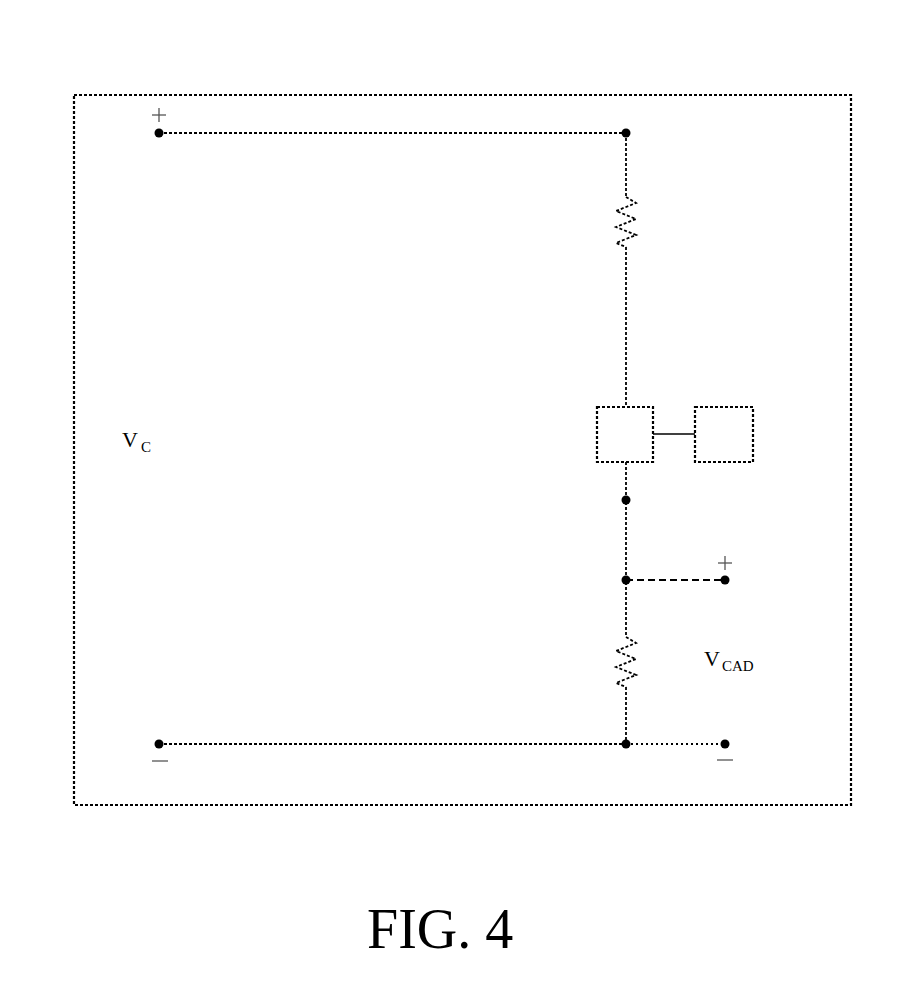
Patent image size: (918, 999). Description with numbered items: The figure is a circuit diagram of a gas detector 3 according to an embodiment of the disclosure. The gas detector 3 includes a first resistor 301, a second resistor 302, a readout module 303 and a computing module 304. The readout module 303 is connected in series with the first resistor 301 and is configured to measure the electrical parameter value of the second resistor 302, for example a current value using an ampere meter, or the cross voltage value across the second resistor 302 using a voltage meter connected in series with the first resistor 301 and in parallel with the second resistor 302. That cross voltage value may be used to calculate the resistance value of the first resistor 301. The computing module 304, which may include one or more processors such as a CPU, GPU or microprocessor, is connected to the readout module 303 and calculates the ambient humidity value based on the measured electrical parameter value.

The gas detector 3 is at (58, 32).
The first resistor 301 is at (615, 228).
The second resistor 302 is at (615, 666).
The readout module 303 is at (610, 405).
The computing module 304 is at (738, 405).